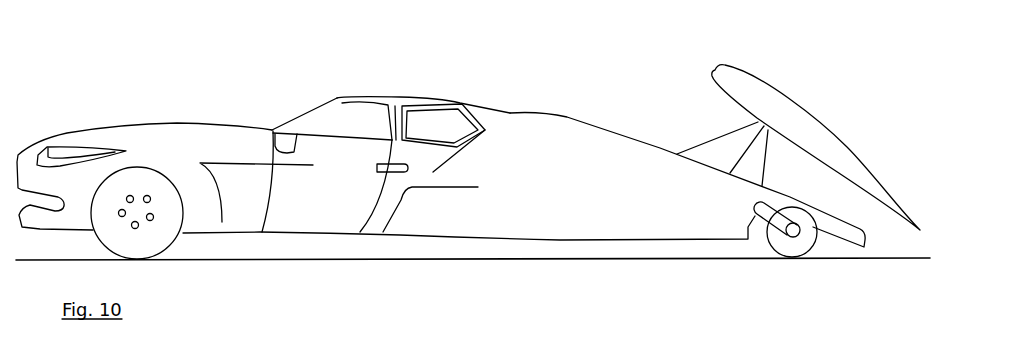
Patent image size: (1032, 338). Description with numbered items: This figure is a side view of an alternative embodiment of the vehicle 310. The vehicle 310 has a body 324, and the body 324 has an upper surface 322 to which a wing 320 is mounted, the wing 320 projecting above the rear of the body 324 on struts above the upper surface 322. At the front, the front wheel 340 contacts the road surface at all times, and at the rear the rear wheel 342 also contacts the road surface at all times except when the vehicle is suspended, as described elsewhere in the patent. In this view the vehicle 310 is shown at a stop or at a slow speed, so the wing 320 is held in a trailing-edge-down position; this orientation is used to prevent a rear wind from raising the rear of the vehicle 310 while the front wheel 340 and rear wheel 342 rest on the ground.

The vehicle 310 is at (427, 82).
The wing 320 is at (792, 100).
The upper surface 322 is at (592, 108).
The body 324 is at (567, 181).
The front wheel 340 is at (173, 243).
The rear wheel 342 is at (777, 240).